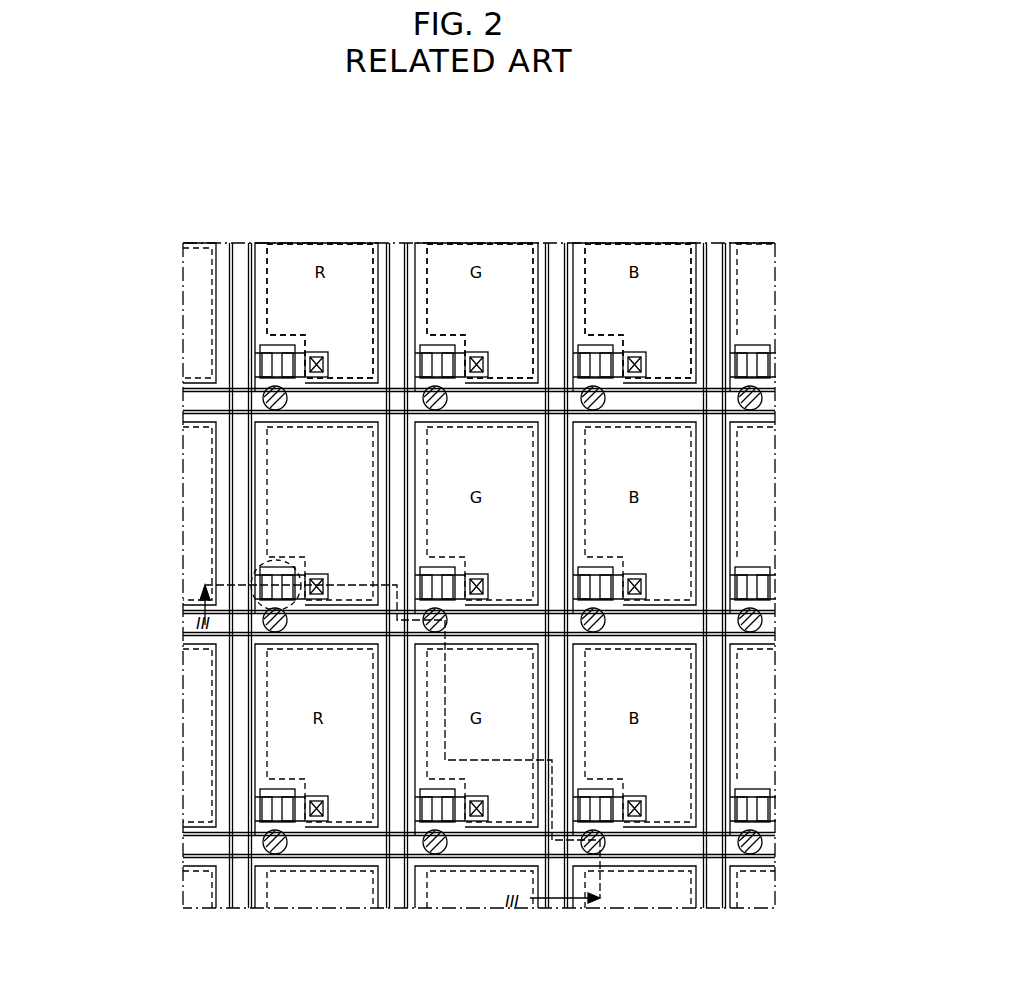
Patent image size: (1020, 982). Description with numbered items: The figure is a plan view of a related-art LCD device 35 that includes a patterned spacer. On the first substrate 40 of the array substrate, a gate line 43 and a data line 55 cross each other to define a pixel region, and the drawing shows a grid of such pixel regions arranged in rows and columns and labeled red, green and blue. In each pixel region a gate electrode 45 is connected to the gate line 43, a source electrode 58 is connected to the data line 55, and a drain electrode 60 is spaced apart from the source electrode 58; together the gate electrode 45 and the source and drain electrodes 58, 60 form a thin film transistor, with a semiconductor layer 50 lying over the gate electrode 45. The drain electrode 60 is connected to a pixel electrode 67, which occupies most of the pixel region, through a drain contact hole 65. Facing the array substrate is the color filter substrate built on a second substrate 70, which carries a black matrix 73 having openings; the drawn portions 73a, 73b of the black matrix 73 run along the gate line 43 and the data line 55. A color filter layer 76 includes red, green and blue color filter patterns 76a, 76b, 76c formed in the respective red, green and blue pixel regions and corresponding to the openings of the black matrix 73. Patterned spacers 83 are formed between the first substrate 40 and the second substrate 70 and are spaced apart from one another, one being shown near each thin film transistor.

The LCD device 35 is at (780, 208).
The first substrate 40 is at (479, 198).
The second substrate 70 is at (678, 242).
The gate line 43 is at (357, 637).
The gate electrode 45 is at (274, 497).
The semiconductor layer 50 is at (283, 612).
The data line 55 is at (232, 673).
The source electrode 58 is at (265, 570).
The drain electrode 60 is at (283, 572).
The drain contact hole 65 is at (315, 575).
The pixel electrode 67 is at (262, 445).
The black matrix 73 is at (72, 360).
The horizontal black matrix portion 73a is at (200, 385).
The vertical black matrix portion 73b is at (222, 355).
The color filter layer 76 is at (479, 233).
The red color filter pattern 76a is at (358, 245).
The green color filter pattern 76b is at (460, 245).
The blue color filter pattern 76c is at (605, 245).
The patterned spacer 83 is at (585, 410).